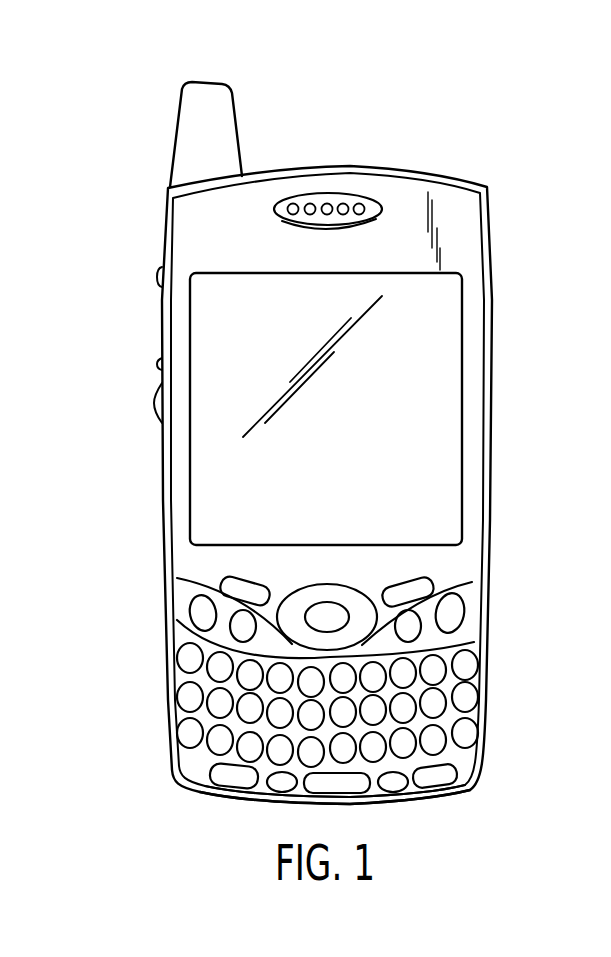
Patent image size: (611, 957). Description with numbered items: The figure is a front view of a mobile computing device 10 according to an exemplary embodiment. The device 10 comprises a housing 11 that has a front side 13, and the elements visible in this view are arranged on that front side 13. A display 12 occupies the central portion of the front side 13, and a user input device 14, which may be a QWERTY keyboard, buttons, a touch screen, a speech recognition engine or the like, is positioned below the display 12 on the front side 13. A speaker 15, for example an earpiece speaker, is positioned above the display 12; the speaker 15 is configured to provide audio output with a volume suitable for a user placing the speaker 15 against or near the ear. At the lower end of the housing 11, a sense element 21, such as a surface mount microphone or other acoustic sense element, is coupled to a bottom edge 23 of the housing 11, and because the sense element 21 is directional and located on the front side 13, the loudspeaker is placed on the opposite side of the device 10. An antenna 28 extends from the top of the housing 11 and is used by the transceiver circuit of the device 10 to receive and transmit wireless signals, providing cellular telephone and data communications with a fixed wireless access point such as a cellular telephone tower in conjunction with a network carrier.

The device 10 is at (441, 96).
The housing 11 is at (458, 217).
The display 12 is at (445, 368).
The front side 13 is at (228, 245).
The user input device 14 is at (466, 698).
The speaker 15 is at (330, 207).
The sense element 21 is at (421, 822).
The bottom edge 23 is at (453, 788).
The antenna 28 is at (238, 127).